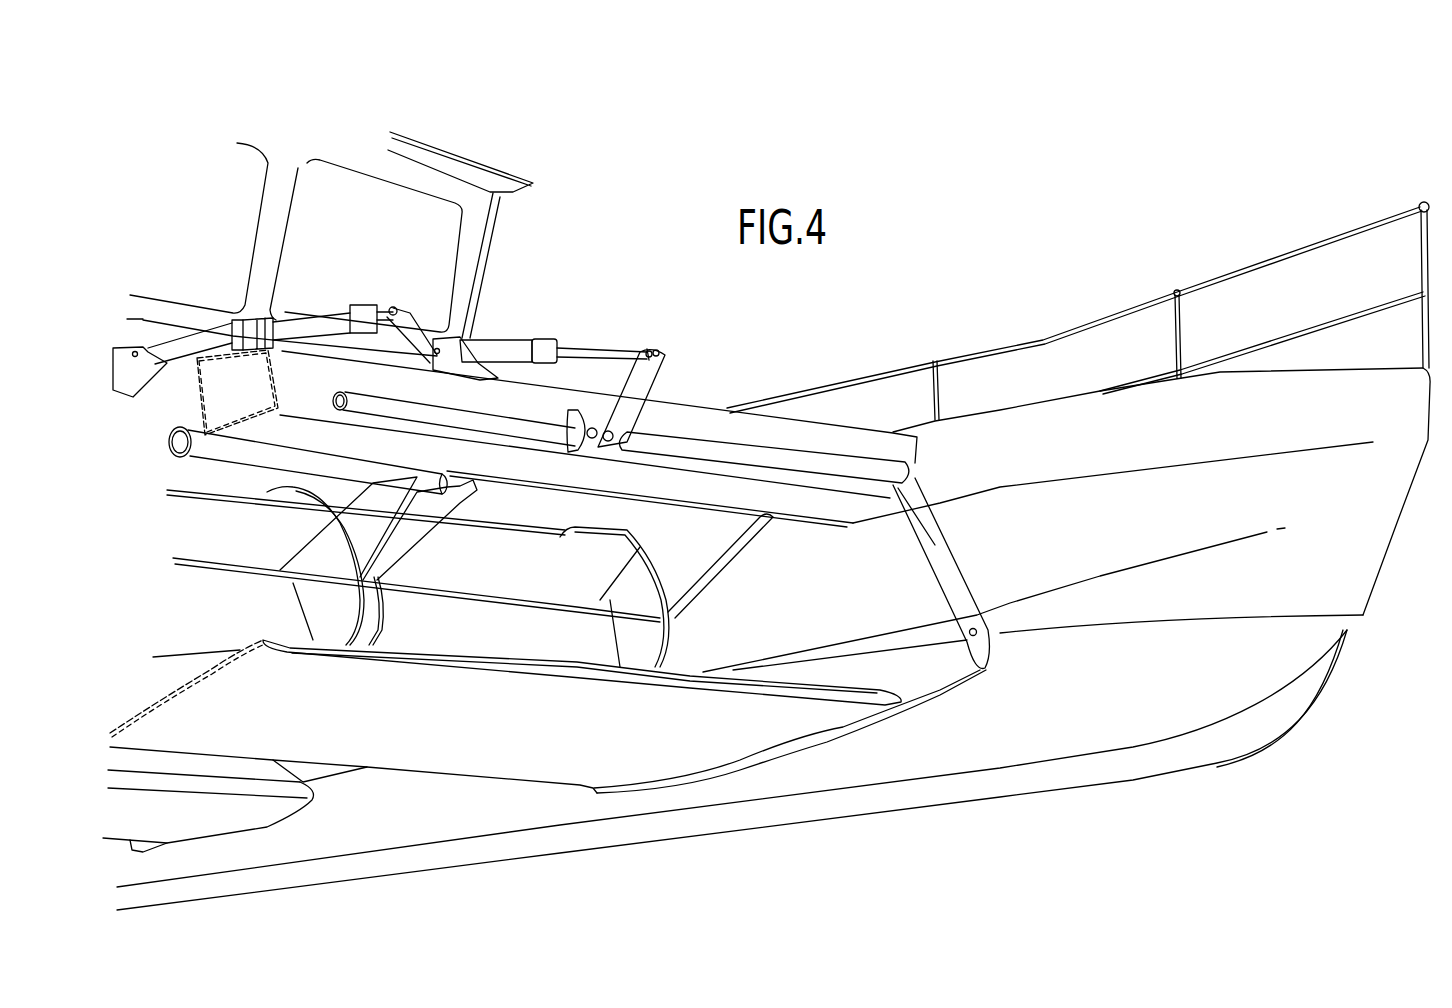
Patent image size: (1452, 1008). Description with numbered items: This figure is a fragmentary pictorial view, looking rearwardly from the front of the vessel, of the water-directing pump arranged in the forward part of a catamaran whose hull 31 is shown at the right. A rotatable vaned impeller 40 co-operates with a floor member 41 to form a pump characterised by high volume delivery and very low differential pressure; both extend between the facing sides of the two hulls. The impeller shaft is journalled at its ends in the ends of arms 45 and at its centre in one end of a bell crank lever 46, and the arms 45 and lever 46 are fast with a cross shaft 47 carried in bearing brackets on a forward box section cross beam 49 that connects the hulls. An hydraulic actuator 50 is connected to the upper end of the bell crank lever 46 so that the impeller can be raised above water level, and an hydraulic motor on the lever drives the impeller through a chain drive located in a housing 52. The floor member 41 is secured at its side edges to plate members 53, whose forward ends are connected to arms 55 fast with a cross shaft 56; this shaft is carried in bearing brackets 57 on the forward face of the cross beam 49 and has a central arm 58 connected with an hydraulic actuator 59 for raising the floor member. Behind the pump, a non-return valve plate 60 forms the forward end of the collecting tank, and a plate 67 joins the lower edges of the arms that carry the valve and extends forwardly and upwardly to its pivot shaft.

The hull 31 is at (1128, 536).
The rotatable vaned impeller 40 is at (252, 547).
The floor member 41 is at (515, 737).
The arms 45 is at (717, 543).
The bell crank lever 46 is at (407, 523).
The cross shaft 47 is at (200, 453).
The forward box section cross beam 49 is at (318, 387).
The hydraulic actuator 50 is at (320, 325).
The housing 52 is at (367, 532).
The plate members 53 is at (837, 723).
The arms 55 is at (947, 575).
The cross shaft 56 is at (833, 467).
The bearing brackets 57 is at (578, 412).
The central arm 58 is at (647, 377).
The hydraulic actuator 59 is at (505, 350).
The plate 60 is at (232, 763).
The plate 67 is at (267, 813).